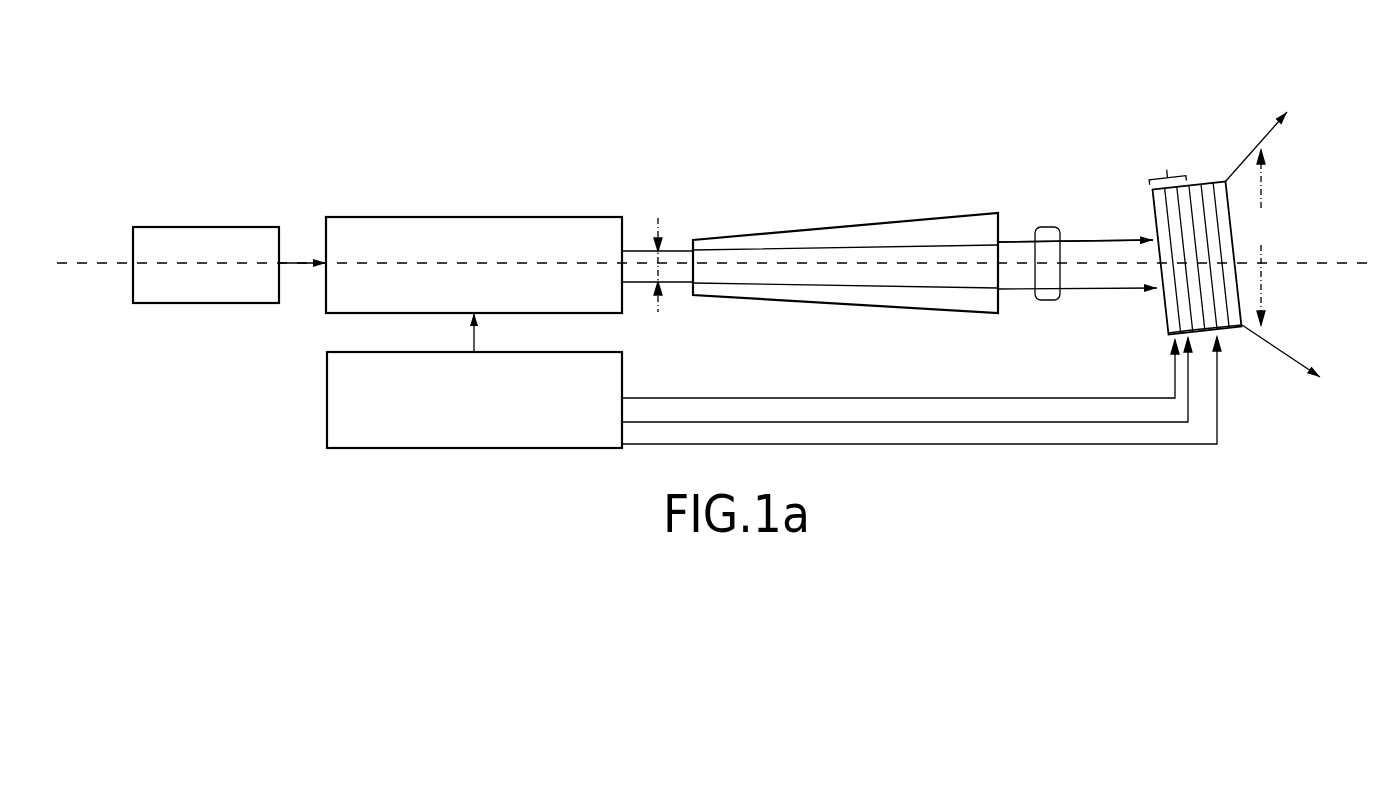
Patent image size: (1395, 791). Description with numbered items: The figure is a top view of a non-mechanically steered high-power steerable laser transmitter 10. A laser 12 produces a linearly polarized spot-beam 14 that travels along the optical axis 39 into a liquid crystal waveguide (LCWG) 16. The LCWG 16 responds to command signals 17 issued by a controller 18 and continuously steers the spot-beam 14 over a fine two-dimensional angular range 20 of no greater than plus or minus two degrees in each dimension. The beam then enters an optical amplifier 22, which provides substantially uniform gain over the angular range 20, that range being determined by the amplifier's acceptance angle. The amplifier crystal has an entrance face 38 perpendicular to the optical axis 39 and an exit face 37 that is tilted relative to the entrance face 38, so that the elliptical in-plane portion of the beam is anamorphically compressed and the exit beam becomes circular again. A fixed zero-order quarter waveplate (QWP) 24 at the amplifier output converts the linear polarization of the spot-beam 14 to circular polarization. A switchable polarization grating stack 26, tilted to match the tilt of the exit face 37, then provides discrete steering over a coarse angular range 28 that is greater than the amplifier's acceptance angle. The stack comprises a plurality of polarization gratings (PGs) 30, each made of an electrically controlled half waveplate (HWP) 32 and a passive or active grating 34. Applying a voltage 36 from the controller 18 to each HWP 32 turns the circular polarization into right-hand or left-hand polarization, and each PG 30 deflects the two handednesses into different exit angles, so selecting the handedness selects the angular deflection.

The steerable laser transmitter 10 is at (318, 75).
The laser 12 is at (202, 227).
The linearly polarized spot-beam 14 is at (301, 262).
The liquid crystal waveguide (LCWG) 16 is at (472, 217).
The command signals 17 is at (477, 342).
The controller 18 is at (327, 393).
The fine two-dimensional angular range 20 is at (655, 270).
The optical amplifier 22 is at (890, 222).
The fixed quarter waveplate (QWP) 24 is at (1043, 227).
The switchable polarization grating stack 26 is at (1195, 241).
The coarse angular range 28 is at (1263, 237).
The polarization gratings (PGs) 30 is at (1187, 233).
The electrically controlled half waveplate (HWP) 32 is at (1173, 323).
The grating 34 is at (1187, 320).
The voltage 36 is at (893, 396).
The exit face 37 is at (1002, 267).
The entrance face 38 is at (692, 277).
The optical axis 39 is at (1335, 264).